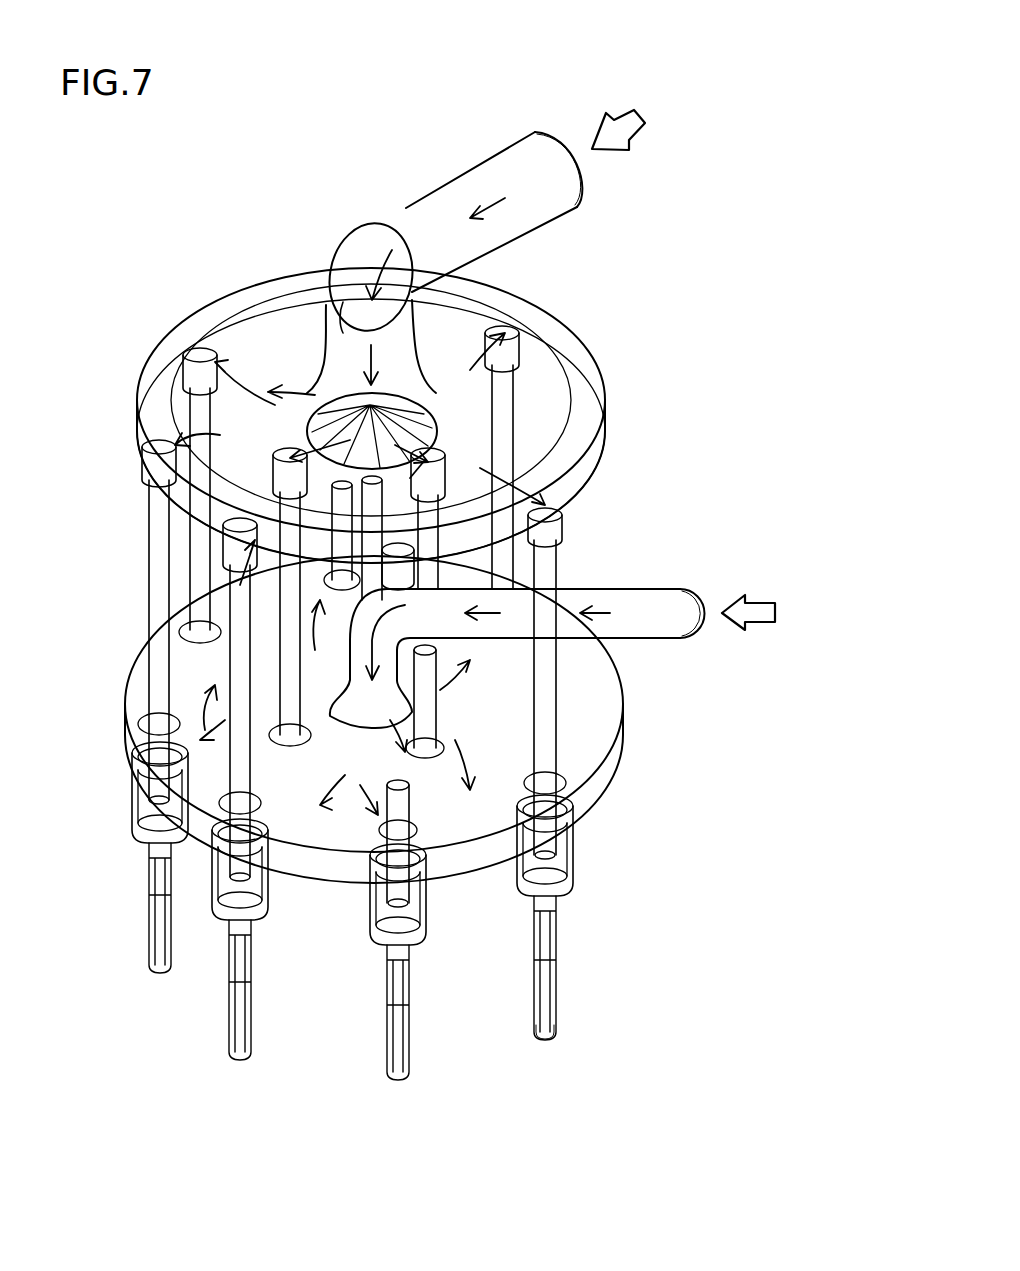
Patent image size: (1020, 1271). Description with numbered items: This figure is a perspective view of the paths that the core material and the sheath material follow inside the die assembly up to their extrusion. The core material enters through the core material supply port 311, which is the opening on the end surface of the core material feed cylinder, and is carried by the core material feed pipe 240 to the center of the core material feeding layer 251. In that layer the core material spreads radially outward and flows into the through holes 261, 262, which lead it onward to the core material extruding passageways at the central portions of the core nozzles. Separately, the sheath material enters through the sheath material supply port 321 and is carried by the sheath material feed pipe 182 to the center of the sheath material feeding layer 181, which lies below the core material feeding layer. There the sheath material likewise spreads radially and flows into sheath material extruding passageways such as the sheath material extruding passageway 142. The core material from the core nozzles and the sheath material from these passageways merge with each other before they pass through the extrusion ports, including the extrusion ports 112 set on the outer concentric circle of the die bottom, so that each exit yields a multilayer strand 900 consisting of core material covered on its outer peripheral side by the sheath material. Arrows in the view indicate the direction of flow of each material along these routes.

The extrusion port 112 is at (548, 957).
The sheath material extruding passageway 142 is at (576, 858).
The sheath material feeding layer 181 is at (608, 776).
The sheath material feed pipe 182 is at (666, 640).
The core material feed pipe 240 is at (506, 165).
The core material feeding layer 251 is at (565, 381).
The through hole 261 is at (478, 463).
The through hole 262 is at (512, 323).
The core material supply port 311 is at (594, 183).
The sheath material supply port 321 is at (703, 592).
The multilayer strand 900 is at (545, 1042).